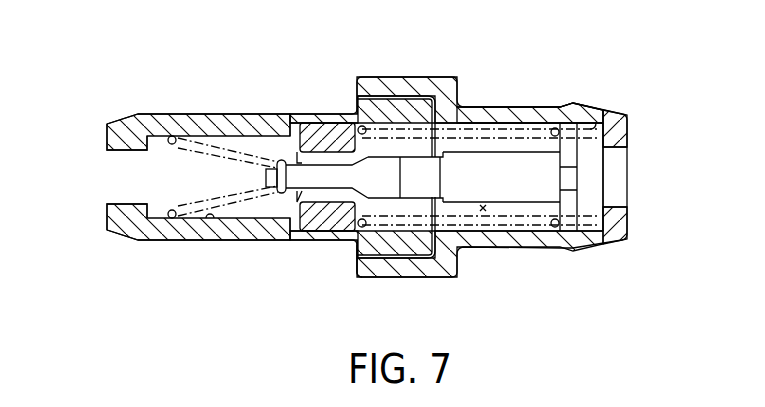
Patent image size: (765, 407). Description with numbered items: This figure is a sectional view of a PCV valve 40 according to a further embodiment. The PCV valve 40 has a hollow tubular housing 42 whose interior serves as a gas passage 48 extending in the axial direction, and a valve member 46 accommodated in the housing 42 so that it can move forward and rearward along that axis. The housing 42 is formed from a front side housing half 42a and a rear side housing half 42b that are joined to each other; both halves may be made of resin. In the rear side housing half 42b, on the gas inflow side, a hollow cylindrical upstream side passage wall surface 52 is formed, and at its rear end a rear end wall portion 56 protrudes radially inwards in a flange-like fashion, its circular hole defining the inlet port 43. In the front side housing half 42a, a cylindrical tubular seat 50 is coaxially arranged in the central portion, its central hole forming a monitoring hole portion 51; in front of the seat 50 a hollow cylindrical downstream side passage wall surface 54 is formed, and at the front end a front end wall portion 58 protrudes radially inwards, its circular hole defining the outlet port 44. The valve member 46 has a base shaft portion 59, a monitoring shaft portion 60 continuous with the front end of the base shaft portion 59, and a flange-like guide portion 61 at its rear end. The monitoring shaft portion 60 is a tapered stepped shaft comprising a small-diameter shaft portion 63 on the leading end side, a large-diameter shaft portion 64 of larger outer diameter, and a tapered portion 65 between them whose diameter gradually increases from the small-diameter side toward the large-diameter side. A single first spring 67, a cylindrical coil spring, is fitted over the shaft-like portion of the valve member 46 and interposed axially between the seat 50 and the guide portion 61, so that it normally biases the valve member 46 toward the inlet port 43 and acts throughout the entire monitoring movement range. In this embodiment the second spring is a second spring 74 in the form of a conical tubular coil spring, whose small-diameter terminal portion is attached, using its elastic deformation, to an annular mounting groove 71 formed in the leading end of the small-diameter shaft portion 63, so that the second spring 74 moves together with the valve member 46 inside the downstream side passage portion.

The PCV valve 40 is at (455, 70).
The housing 42 is at (395, 74).
The front side housing half 42a is at (227, 129).
The rear side housing half 42b is at (547, 119).
The inlet port 43 is at (620, 178).
The outlet port 44 is at (106, 181).
The valve member 46 is at (500, 148).
The gas passage 48 is at (483, 212).
The seat 50 is at (332, 128).
The monitoring hole portion 51 is at (296, 152).
The upstream side passage wall surface 52 is at (600, 122).
The downstream side passage wall surface 54 is at (209, 220).
The rear end wall portion 56 is at (617, 139).
The front end wall portion 58 is at (106, 129).
The base shaft portion 59 is at (522, 200).
The monitoring shaft portion 60 is at (381, 204).
The guide portion 61 is at (568, 226).
The small-diameter shaft portion 63 is at (320, 181).
The large-diameter shaft portion 64 is at (417, 150).
The tapered portion 65 is at (385, 138).
The first spring 67 is at (356, 248).
The mounting groove 71 is at (283, 197).
The second spring 74 is at (171, 219).